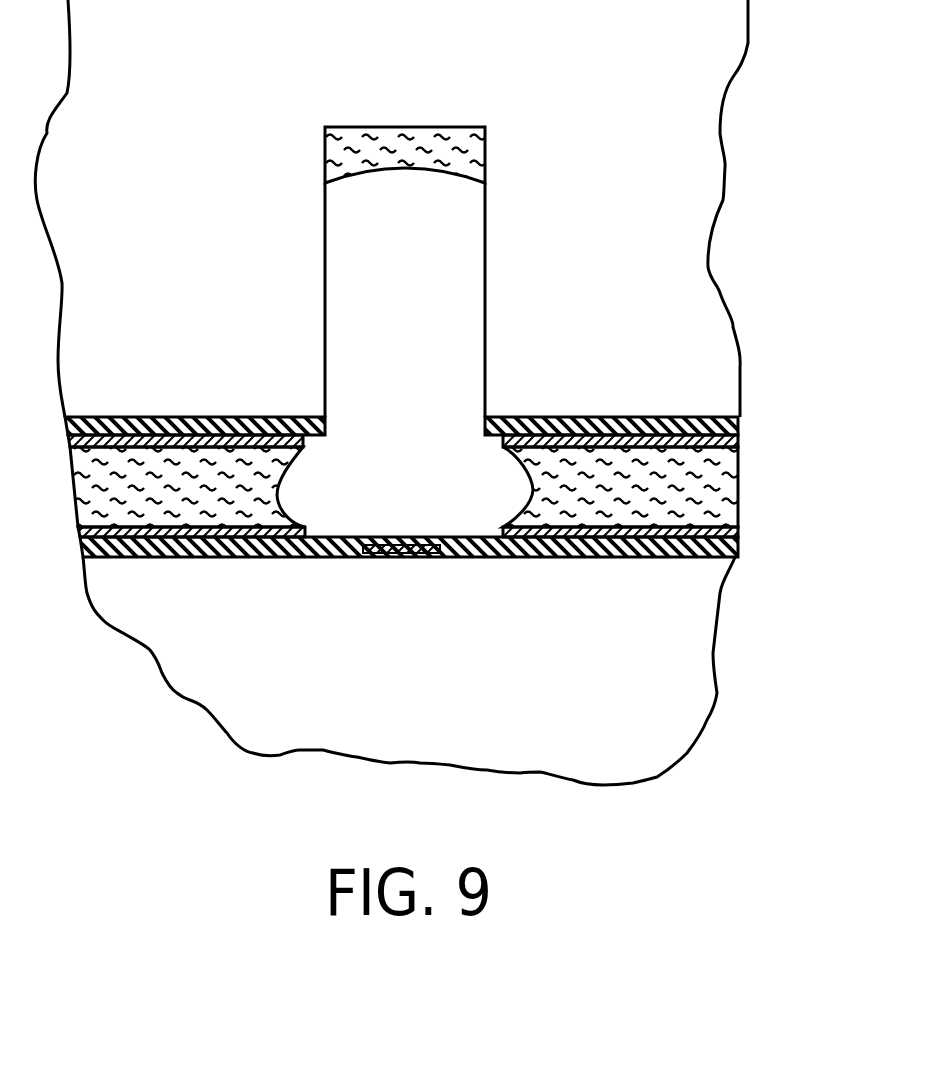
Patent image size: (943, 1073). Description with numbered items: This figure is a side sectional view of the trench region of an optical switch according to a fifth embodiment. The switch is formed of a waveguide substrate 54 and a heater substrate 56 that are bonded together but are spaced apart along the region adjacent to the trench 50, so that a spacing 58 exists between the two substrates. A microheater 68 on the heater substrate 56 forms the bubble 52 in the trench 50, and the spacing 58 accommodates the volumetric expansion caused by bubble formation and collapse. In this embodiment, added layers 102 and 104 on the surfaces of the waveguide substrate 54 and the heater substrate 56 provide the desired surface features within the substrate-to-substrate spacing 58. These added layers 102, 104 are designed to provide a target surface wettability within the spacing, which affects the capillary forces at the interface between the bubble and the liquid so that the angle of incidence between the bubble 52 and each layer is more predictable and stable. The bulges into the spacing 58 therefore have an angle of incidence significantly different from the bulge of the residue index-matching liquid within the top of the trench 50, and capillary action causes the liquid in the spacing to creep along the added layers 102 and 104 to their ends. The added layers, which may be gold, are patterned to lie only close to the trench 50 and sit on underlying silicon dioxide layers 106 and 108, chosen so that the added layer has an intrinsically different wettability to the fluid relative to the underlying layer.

The trench 50 is at (461, 142).
The bubble 52 is at (473, 297).
The waveguide substrate 54 is at (722, 358).
The heater substrate 56 is at (703, 698).
The spacing 58 is at (723, 472).
The microheater 68 is at (421, 558).
The added layer 102 is at (737, 440).
The added layer 104 is at (733, 543).
The silicon dioxide layer 106 is at (740, 423).
The silicon dioxide layer 108 is at (732, 552).